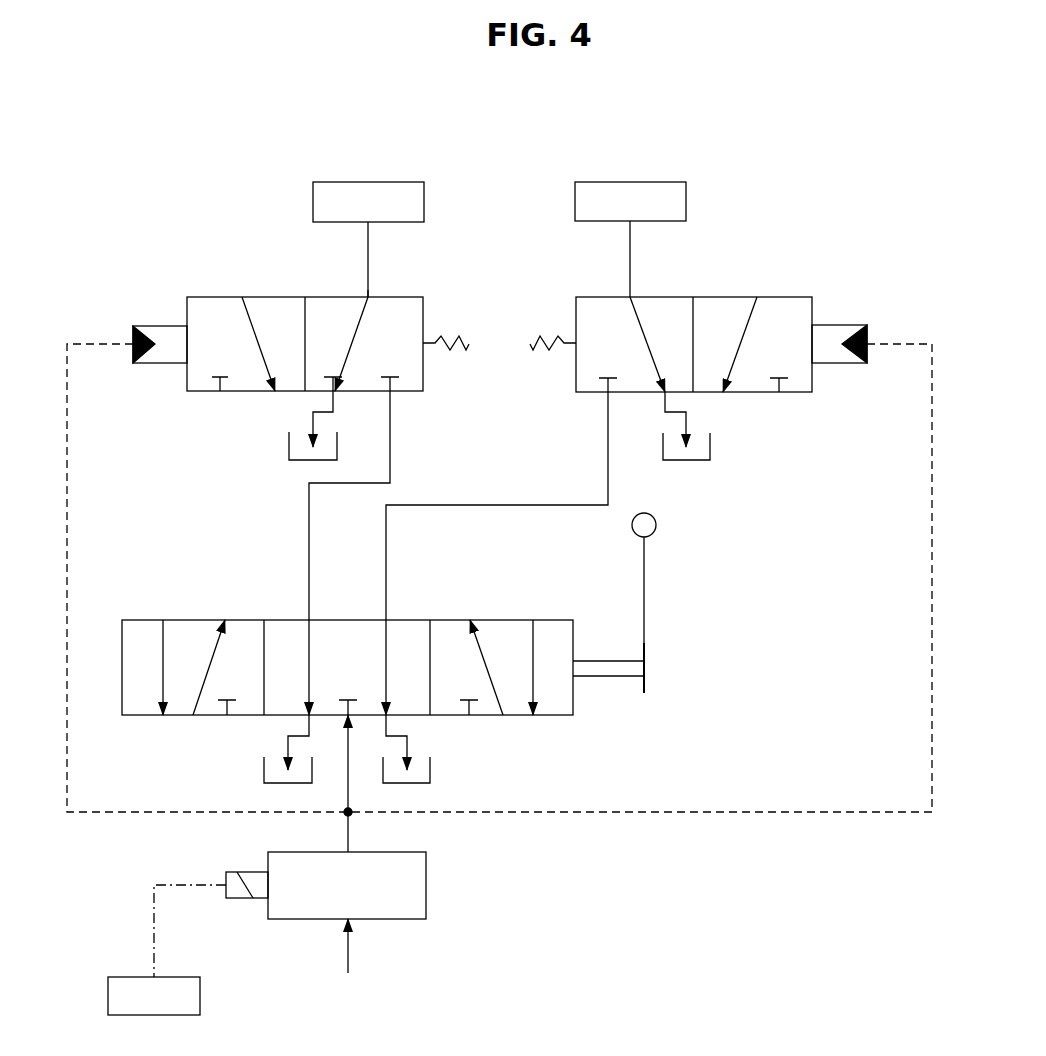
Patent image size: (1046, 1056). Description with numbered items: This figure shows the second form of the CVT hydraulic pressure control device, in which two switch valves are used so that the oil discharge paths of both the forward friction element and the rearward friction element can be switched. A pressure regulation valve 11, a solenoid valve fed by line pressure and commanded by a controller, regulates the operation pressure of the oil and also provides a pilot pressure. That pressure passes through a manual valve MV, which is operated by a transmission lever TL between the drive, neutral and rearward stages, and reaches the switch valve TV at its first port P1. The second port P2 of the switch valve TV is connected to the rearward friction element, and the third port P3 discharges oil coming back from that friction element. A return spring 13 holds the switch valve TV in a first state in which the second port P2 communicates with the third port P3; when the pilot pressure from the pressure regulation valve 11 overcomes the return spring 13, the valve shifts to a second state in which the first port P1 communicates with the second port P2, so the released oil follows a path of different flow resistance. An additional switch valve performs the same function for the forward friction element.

The pressure regulation valve 11 is at (426, 886).
The return spring 13 is at (460, 333).
The switch valve TV is at (291, 326).
The manual valve MV is at (160, 606).
The transmission lever TL is at (656, 525).
The first port P1 is at (390, 391).
The second port P2 is at (368, 296).
The third port P3 is at (220, 391).